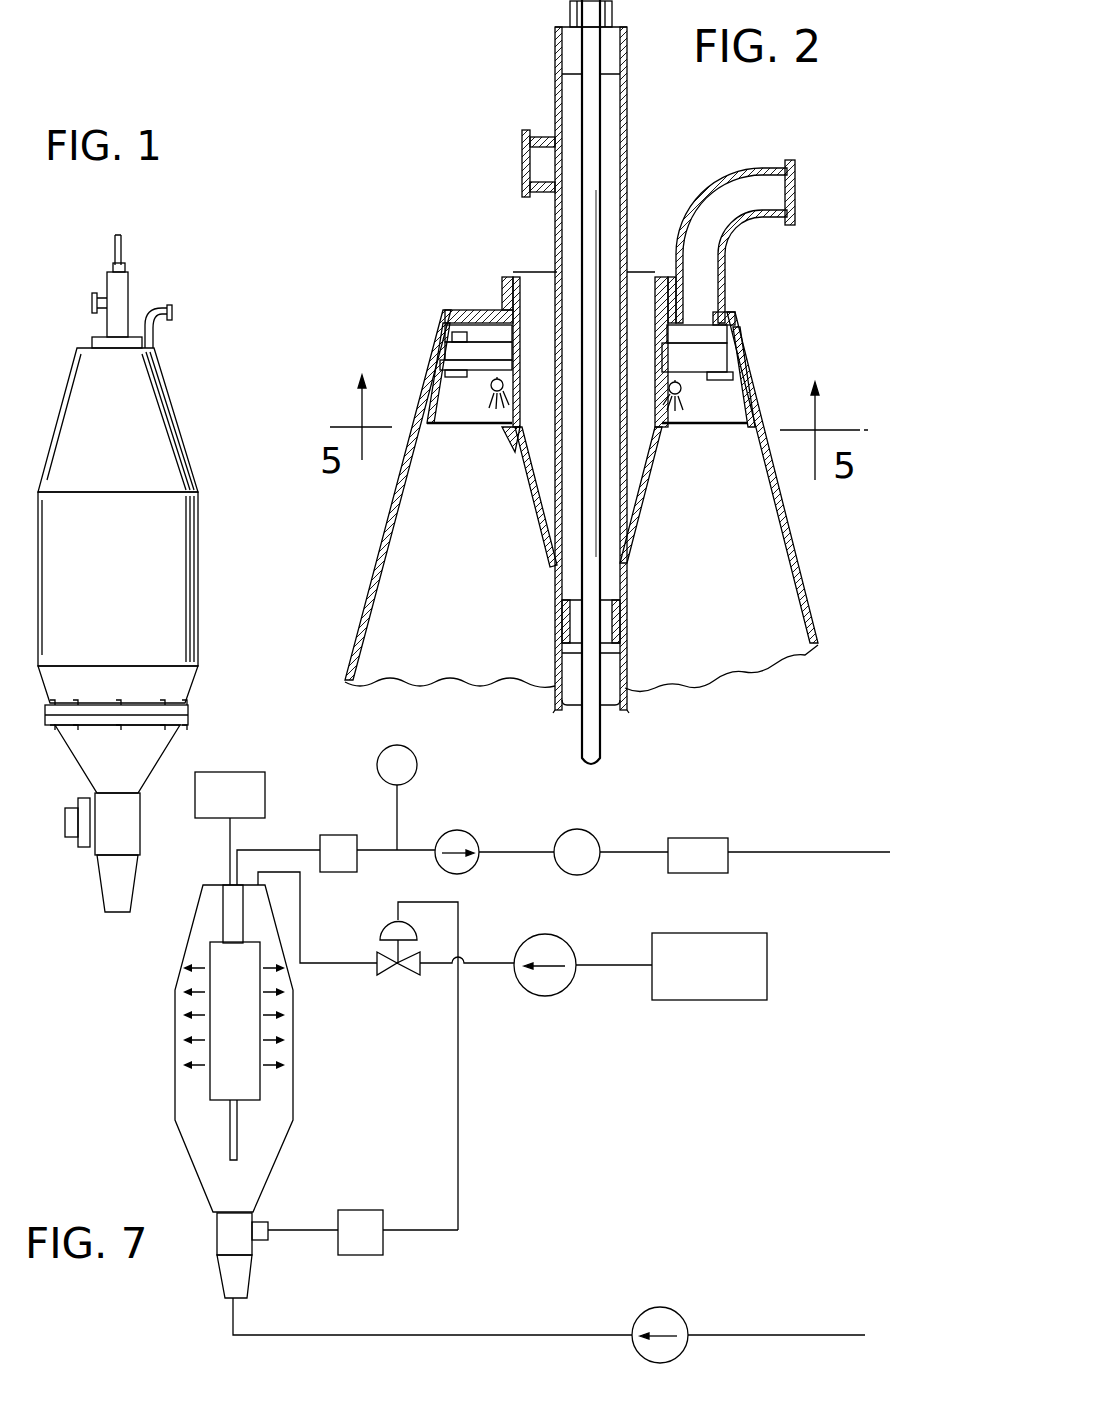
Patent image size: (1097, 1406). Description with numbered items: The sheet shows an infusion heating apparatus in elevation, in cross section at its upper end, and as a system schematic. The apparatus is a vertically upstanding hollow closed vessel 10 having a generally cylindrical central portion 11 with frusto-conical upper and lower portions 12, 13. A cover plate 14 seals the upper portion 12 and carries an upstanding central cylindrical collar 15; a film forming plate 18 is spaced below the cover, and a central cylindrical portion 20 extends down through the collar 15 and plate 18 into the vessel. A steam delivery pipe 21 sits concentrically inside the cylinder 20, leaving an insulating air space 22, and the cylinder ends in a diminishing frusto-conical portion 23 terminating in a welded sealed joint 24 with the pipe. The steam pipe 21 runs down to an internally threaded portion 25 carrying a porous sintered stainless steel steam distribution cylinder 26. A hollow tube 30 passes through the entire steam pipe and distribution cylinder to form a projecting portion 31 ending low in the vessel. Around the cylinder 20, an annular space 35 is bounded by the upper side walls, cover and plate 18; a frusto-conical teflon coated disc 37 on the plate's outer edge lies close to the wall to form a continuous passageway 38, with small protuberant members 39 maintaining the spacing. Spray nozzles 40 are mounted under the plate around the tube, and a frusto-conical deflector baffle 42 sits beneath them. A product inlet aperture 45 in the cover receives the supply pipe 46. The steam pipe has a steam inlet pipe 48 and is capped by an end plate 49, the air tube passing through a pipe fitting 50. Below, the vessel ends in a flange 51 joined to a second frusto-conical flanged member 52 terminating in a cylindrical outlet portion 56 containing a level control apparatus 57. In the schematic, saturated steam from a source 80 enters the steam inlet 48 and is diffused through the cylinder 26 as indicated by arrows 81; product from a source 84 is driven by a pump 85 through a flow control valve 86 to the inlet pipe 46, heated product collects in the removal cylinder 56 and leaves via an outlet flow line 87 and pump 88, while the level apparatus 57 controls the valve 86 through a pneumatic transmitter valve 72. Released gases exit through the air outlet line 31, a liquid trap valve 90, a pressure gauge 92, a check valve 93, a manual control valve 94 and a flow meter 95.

In FIG. 1, the vessel 10 is at (205, 541).
In FIG. 7, the vessel 10 is at (162, 990).
In FIG. 1, the cylindrical central portion 11 is at (192, 580).
In FIG. 1, the upper portion 12 is at (155, 418).
In FIG. 1, the lower portion 13 is at (178, 688).
In FIG. 7, the lower portion 13 is at (273, 1163).
In FIG. 2, the cover plate 14 is at (445, 314).
In FIG. 1, the central cylindrical collar 15 is at (92, 343).
In FIG. 2, the central cylindrical collar 15 is at (503, 285).
In FIG. 2, the film forming plate 18 is at (463, 353).
In FIG. 2, the central cylindrical portion 20 is at (505, 378).
In FIG. 1, the steam delivery pipe 21 is at (128, 290).
In FIG. 2, the steam delivery pipe 21 is at (627, 183).
In FIG. 7, the steam delivery pipe 21 is at (227, 910).
In FIG. 2, the insulating air space 22 is at (637, 298).
In FIG. 2, the frusto-conical portion 23 is at (647, 493).
In FIG. 2, the welded sealed joint 24 is at (627, 568).
In FIG. 2, the internally threaded portion 25 is at (621, 614).
In FIG. 2, the steam distribution cylinder 26 is at (627, 668).
In FIG. 7, the steam distribution cylinder 26 is at (217, 1080).
In FIG. 1, the hollow tube 30 is at (122, 244).
In FIG. 2, the hollow tube 30 is at (590, 121).
In FIG. 7, the projecting portion 31 is at (232, 1137).
In FIG. 2, the annular space 35 is at (478, 318).
In FIG. 2, the disc 37 is at (440, 427).
In FIG. 2, the passageway 38 is at (420, 428).
In FIG. 2, the protuberant members 39 is at (432, 392).
In FIG. 2, the spray nozzles 40 is at (680, 400).
In FIG. 2, the deflector baffle 42 is at (508, 455).
In FIG. 2, the product inlet aperture 45 is at (703, 327).
In FIG. 1, the supply pipe 46 is at (172, 315).
In FIG. 2, the supply pipe 46 is at (735, 232).
In FIG. 7, the supply pipe 46 is at (283, 872).
In FIG. 1, the steam inlet pipe 48 is at (92, 303).
In FIG. 2, the steam inlet pipe 48 is at (522, 153).
In FIG. 7, the steam inlet pipe 48 is at (228, 840).
In FIG. 2, the end plate 49 is at (610, 62).
In FIG. 1, the pipe fitting 50 is at (113, 265).
In FIG. 2, the pipe fitting 50 is at (570, 10).
In FIG. 1, the flange 51 is at (188, 713).
In FIG. 1, the second frusto-conical flanged member 52 is at (95, 752).
In FIG. 7, the cylindrical outlet portion 56 is at (215, 1233).
In FIG. 7, the level control apparatus 57 is at (262, 1218).
In FIG. 7, the pneumatic transmitter valve 72 is at (355, 1243).
In FIG. 7, the source 80 is at (235, 772).
In FIG. 7, the arrows 81 is at (265, 1063).
In FIG. 7, the source 84 is at (713, 985).
In FIG. 7, the pump 85 is at (541, 997).
In FIG. 7, the flow control valve 86 is at (412, 972).
In FIG. 7, the outlet flow line 87 is at (393, 1335).
In FIG. 7, the pump 88 is at (655, 1307).
In FIG. 7, the liquid trap valve 90 is at (340, 837).
In FIG. 7, the pressure gauge 92 is at (416, 773).
In FIG. 7, the check valve 93 is at (470, 832).
In FIG. 7, the manual control valve 94 is at (572, 831).
In FIG. 7, the flow meter 95 is at (693, 840).